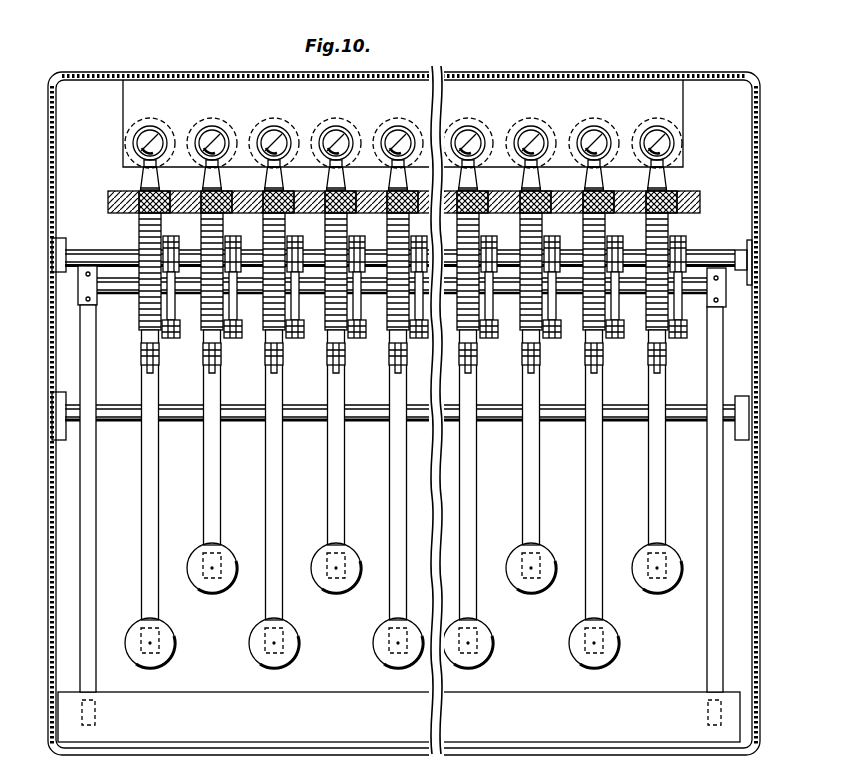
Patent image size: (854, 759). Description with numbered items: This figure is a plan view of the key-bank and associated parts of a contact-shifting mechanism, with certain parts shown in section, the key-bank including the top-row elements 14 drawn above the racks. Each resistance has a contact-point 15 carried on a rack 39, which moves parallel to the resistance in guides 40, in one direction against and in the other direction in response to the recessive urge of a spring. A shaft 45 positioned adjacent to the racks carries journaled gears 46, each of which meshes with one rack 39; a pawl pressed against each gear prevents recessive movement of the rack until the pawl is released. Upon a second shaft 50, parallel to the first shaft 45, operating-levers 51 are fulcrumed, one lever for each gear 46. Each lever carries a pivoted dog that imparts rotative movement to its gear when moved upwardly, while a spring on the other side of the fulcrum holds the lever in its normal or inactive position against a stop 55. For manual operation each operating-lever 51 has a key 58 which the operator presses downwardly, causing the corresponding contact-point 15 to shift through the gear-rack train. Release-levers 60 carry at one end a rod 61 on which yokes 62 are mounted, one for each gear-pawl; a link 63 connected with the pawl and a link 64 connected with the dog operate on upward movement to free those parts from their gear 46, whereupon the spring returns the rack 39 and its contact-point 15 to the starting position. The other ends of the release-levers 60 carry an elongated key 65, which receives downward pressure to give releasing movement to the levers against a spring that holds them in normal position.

The keys 14 is at (203, 122).
The contact-point 15 is at (154, 182).
The rack 39 is at (140, 188).
The guides 40 is at (108, 200).
The shaft 45 is at (118, 254).
The gears 46 is at (139, 234).
The shaft 50 is at (113, 407).
The operating-levers 51 is at (203, 442).
The stop 55 is at (585, 330).
The key 58 is at (212, 590).
The release-levers 60 is at (90, 530).
The rod 61 is at (120, 290).
The yokes 62 is at (165, 320).
The link 63 is at (168, 236).
The link 64 is at (182, 338).
The elongated key 65 is at (480, 710).